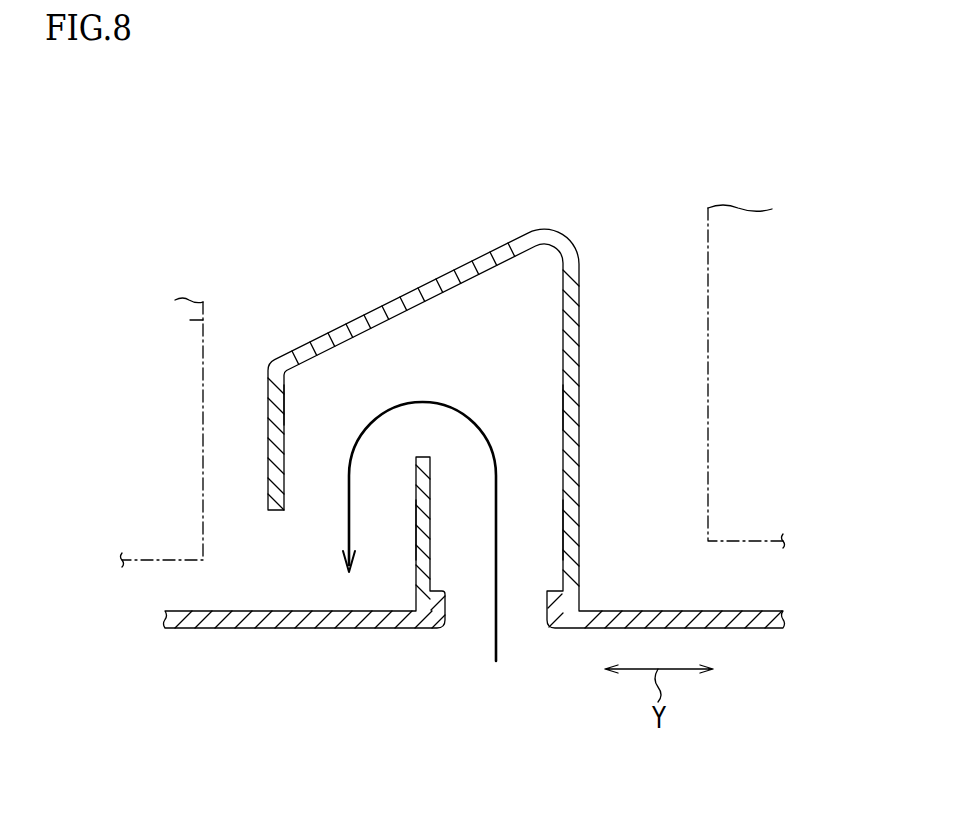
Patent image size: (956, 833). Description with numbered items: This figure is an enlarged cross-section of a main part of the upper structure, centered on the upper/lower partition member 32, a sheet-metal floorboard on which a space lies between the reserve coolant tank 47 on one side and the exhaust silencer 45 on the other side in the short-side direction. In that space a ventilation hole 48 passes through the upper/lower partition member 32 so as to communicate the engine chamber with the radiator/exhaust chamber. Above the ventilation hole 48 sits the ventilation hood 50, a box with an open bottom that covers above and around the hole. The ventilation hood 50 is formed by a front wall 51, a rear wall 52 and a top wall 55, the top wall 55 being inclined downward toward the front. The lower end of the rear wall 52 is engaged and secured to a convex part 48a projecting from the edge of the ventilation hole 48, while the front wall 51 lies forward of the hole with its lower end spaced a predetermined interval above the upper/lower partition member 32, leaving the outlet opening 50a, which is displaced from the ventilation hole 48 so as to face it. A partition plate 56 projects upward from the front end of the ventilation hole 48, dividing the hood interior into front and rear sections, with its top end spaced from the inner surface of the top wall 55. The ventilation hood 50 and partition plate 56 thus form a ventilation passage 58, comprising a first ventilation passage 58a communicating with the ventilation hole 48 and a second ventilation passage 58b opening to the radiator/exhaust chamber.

The upper/lower partition member 32 is at (257, 620).
The exhaust silencer 45 is at (743, 222).
The reserve coolant tank 47 is at (210, 317).
The ventilation hole 48 is at (470, 605).
The convex part 48a is at (537, 610).
The ventilation hood 50 is at (378, 268).
The outlet opening 50a is at (380, 513).
The front wall 51 is at (268, 442).
The rear wall 52 is at (580, 445).
The top wall 55 is at (450, 271).
The partition plate 56 is at (437, 527).
The ventilation passage 58 is at (522, 408).
The first ventilation passage 58a is at (532, 527).
The second ventilation passage 58b is at (310, 403).